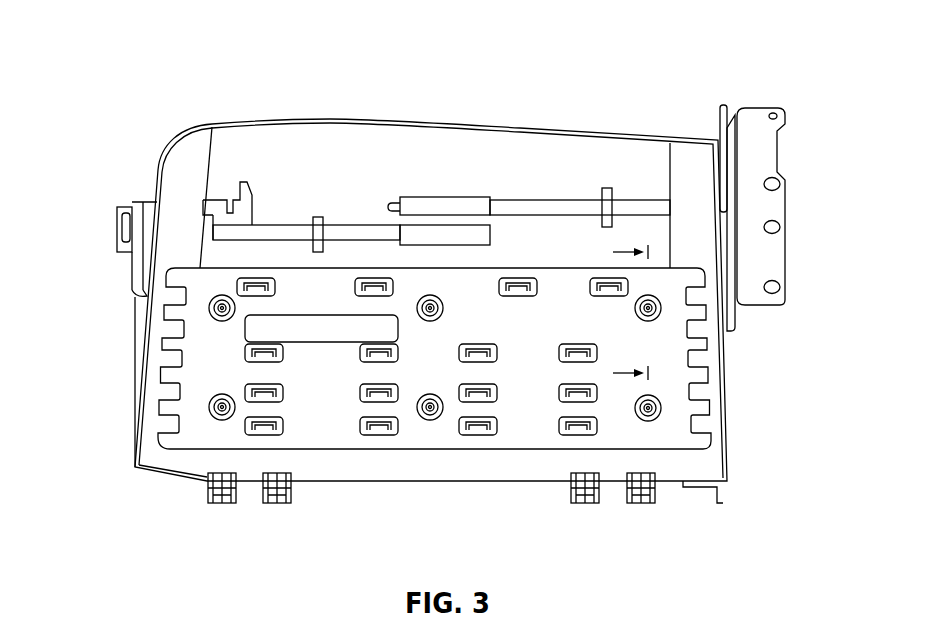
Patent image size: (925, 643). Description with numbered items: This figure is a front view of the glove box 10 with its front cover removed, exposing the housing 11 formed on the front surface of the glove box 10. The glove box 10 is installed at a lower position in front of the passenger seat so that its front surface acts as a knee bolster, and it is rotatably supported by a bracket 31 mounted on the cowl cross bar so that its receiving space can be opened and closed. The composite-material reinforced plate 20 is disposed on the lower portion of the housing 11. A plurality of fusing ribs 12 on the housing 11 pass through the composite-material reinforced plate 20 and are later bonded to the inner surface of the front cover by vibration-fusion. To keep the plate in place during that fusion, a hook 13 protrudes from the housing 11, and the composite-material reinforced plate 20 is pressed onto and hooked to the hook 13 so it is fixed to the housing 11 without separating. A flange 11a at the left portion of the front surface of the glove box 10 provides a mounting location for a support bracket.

The glove box 10 is at (230, 112).
The housing 11 is at (567, 150).
The flange 11a is at (147, 322).
The fusing ribs 12 is at (516, 298).
The hook 13 is at (650, 410).
The composite-material reinforced plate 20 is at (665, 345).
The bracket 31 is at (762, 153).